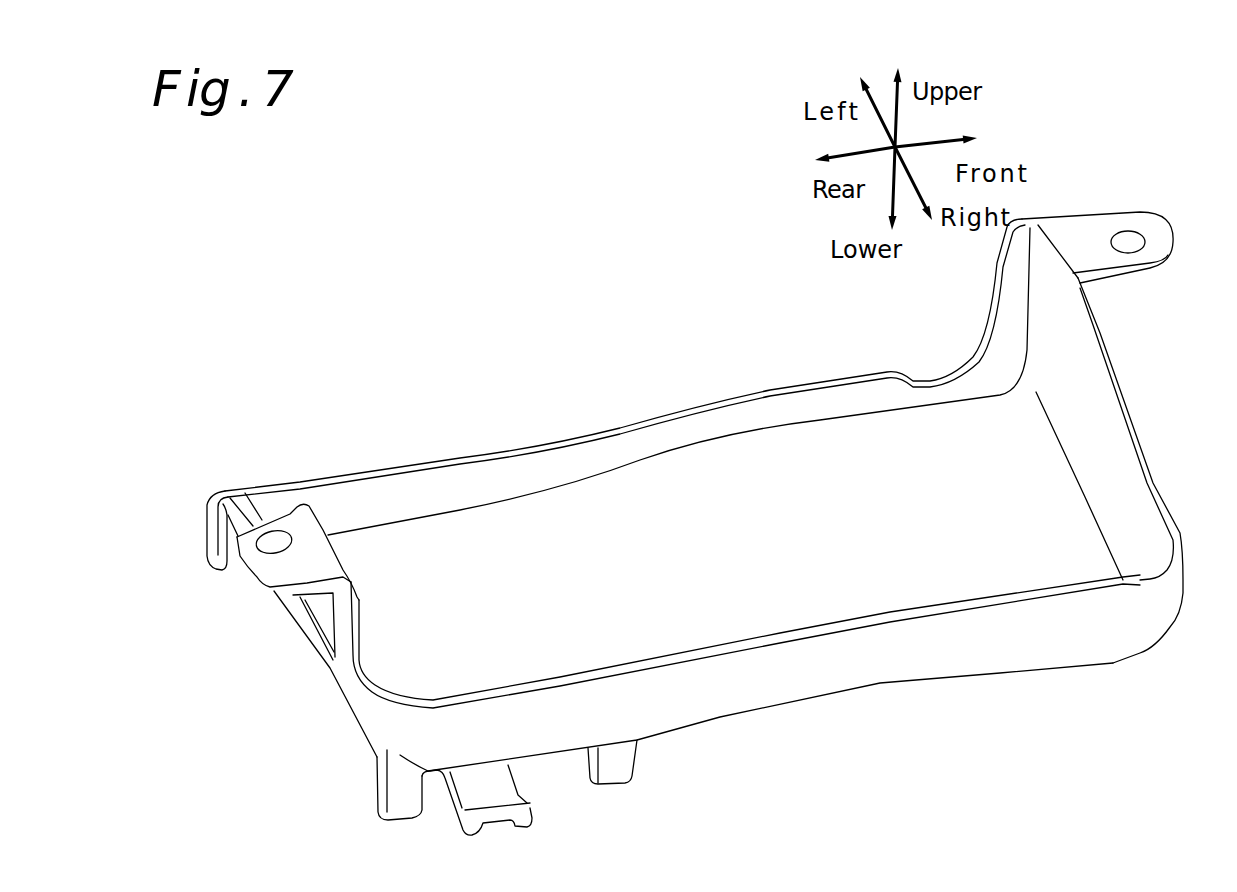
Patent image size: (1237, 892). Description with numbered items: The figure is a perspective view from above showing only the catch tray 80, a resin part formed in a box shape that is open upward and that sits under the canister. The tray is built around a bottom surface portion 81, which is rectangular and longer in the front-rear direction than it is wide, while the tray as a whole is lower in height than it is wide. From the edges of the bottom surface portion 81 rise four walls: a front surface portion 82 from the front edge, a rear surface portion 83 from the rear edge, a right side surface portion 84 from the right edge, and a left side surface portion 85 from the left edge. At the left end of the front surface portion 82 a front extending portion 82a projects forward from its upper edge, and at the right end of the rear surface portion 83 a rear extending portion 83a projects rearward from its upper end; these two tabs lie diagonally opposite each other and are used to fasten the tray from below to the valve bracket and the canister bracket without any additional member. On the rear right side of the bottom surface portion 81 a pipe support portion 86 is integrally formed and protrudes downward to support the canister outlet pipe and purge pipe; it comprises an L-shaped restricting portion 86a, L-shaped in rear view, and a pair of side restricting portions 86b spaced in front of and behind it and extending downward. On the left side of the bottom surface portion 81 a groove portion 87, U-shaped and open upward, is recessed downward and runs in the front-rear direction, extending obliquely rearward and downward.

The catch tray 80 is at (569, 296).
The bottom surface portion 81 is at (758, 573).
The front surface portion 82 is at (1150, 455).
The front extending portion 82a is at (1090, 237).
The rear surface portion 83 is at (343, 678).
The rear extending portion 83a is at (293, 503).
The right side surface portion 84 is at (808, 667).
The left side surface portion 85 is at (502, 473).
The pipe support portion 86 is at (720, 797).
The L-shaped restricting portion 86a is at (530, 812).
The side restricting portions 86b is at (630, 787).
The groove portion 87 is at (207, 558).